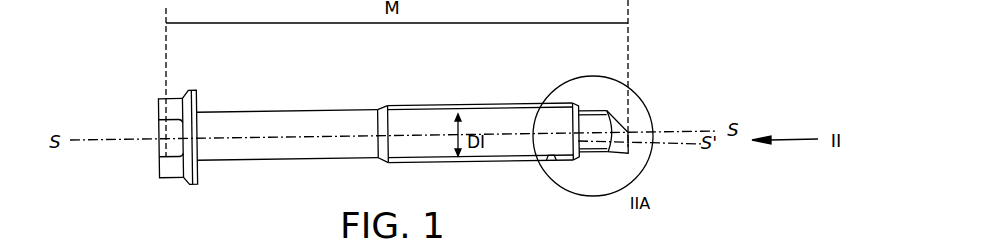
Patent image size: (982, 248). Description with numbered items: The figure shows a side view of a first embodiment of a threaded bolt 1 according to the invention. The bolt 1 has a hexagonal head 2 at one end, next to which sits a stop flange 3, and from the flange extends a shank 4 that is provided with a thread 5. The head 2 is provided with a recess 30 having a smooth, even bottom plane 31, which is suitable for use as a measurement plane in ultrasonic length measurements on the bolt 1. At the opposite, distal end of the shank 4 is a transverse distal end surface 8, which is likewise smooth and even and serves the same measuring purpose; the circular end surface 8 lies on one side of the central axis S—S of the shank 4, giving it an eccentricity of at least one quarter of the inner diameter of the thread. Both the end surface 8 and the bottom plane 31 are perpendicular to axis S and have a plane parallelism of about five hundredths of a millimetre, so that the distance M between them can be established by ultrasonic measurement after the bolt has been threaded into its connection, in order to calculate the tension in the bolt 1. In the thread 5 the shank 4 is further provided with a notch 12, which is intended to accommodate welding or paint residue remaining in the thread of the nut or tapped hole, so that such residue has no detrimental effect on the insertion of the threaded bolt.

The threaded bolt 1 is at (350, 76).
The hexagonal head 2 is at (163, 99).
The stop flange 3 is at (200, 99).
The shank 4 is at (380, 107).
The thread 5 is at (488, 165).
The transverse distal end surface 8 is at (632, 148).
The notch 12 is at (563, 162).
The recess 30 is at (159, 147).
The bottom plane 31 is at (159, 130).